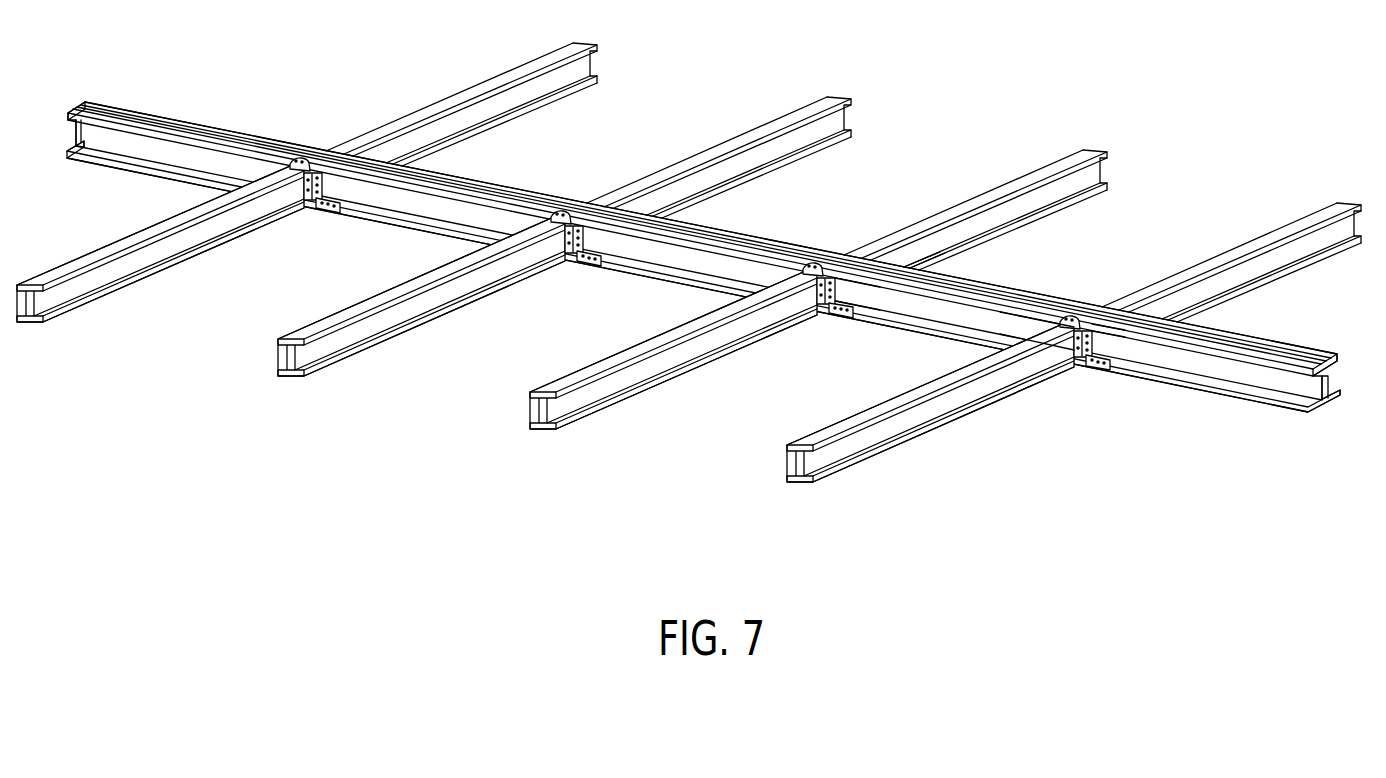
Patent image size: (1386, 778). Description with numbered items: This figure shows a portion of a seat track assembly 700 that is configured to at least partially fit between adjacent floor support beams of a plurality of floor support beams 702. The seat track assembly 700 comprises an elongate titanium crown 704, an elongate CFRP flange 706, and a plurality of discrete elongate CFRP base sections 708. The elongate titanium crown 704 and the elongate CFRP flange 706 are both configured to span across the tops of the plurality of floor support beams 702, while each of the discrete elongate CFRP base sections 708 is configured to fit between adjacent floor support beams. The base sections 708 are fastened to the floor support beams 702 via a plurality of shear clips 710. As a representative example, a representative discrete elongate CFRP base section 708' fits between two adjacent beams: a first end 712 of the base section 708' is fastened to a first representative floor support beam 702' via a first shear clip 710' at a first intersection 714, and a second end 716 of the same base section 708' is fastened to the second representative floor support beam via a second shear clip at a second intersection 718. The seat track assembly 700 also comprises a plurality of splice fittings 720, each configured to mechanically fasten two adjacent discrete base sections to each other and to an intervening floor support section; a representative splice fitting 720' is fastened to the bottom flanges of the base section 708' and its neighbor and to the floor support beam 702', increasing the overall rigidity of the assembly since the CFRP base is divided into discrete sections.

The seat track assembly 700 is at (726, 292).
The floor support beams 702 is at (307, 182).
The first representative floor support beam 702' is at (564, 278).
The elongate titanium crown 704 is at (1327, 352).
The elongate CFRP flange 706 is at (1337, 360).
The discrete elongate CFRP base sections 708 is at (723, 311).
The representative discrete elongate CFRP base section 708' is at (902, 307).
The shear clips 710 is at (1066, 387).
The first shear clip 710' is at (811, 320).
The first end 712 is at (847, 289).
The first intersection 714 is at (832, 277).
The second end 716 is at (1028, 327).
The second intersection 718 is at (1088, 329).
The splice fittings 720 is at (1108, 406).
The representative splice fitting 720' is at (834, 341).